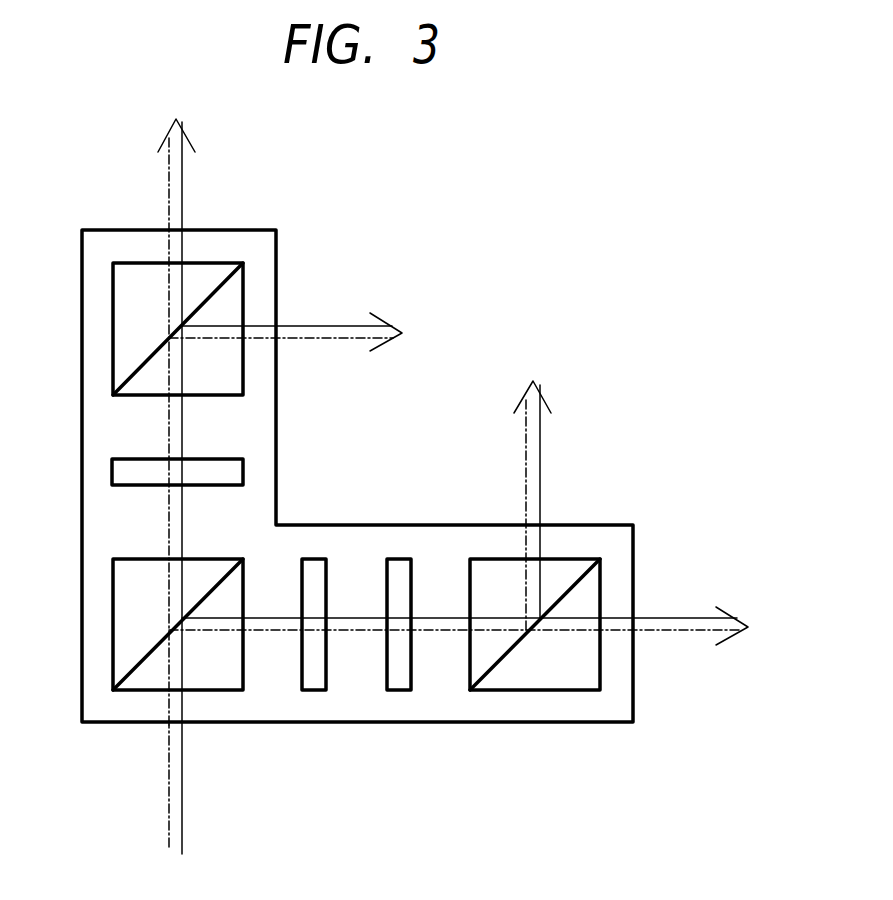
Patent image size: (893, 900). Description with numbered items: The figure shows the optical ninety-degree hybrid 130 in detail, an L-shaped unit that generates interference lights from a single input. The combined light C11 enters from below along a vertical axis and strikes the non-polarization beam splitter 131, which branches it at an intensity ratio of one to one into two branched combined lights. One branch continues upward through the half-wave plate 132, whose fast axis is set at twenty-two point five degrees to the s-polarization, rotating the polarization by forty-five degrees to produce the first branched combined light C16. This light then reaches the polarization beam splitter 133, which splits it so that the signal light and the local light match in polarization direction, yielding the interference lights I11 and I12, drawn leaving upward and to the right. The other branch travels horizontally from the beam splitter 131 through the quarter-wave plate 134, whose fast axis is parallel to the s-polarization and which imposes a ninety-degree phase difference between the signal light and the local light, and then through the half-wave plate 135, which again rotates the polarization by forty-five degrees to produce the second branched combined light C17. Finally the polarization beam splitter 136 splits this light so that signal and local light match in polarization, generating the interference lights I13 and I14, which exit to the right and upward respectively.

The optical 90-degree hybrid 130 is at (112, 230).
The non-polarization beam splitter 131 is at (113, 627).
The half-wave plate 132 is at (112, 472).
The polarization beam splitter 133 is at (113, 328).
The quarter-wave plate 134 is at (313, 690).
The half-wave plate 135 is at (397, 690).
The polarization beam splitter 136 is at (537, 690).
The interference light I11 is at (206, 185).
The interference light I12 is at (331, 299).
The interference light I13 is at (677, 592).
The interference light I14 is at (574, 457).
The combined light C11 is at (146, 793).
The first branched combined light C16 is at (206, 435).
The second branched combined light C17 is at (442, 646).